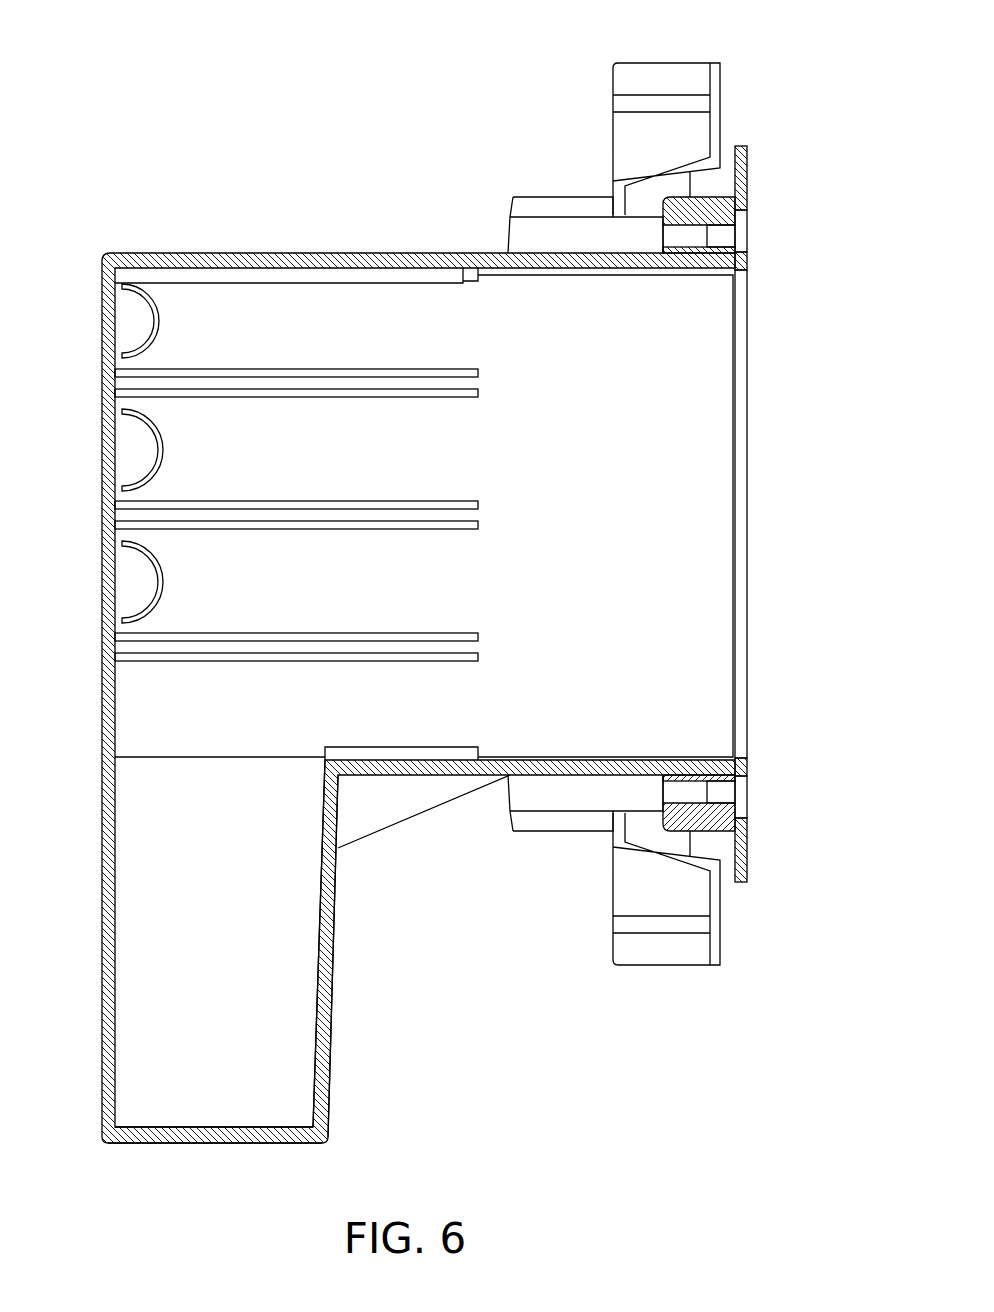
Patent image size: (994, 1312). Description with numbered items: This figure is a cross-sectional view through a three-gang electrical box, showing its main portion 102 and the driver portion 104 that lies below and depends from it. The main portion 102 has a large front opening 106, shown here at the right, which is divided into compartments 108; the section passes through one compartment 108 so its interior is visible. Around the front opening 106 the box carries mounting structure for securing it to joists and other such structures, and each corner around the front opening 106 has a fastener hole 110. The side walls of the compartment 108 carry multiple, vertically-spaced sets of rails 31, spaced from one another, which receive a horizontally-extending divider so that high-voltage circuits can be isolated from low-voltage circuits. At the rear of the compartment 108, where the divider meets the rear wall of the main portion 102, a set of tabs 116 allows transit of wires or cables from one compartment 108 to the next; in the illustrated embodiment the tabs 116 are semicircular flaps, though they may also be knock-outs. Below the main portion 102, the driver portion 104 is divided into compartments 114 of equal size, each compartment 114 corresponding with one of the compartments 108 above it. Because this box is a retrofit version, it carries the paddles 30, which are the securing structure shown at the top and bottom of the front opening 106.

The paddle 30 is at (663, 80).
The rails 31 is at (433, 397).
The main portion 102 is at (272, 250).
The driver portion 104 is at (171, 1146).
The front opening 106 is at (752, 405).
The compartment 108 is at (473, 323).
The fastener hole 110 is at (745, 233).
The compartment 114 is at (152, 940).
The tabs 116 is at (147, 320).